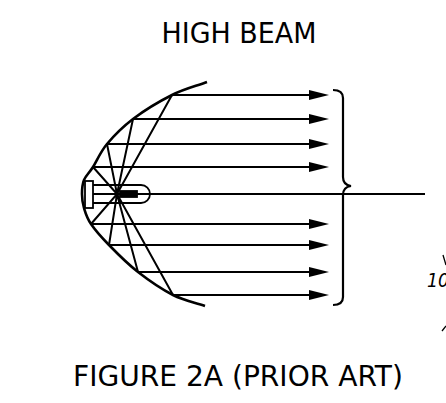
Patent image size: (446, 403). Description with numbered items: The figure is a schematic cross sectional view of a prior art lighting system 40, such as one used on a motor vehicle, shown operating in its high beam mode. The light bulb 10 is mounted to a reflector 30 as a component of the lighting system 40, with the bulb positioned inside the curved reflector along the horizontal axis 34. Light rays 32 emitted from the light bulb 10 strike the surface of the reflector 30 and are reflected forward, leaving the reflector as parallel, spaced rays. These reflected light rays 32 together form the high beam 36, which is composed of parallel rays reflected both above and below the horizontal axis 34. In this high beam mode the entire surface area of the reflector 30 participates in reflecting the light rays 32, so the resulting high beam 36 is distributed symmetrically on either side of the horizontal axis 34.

The light bulb 10 is at (72, 217).
The reflector 30 is at (118, 128).
The light rays 32 is at (292, 94).
The horizontal axis 34 is at (378, 193).
The high beam 36 is at (351, 183).
The lighting system 40 is at (146, 303).